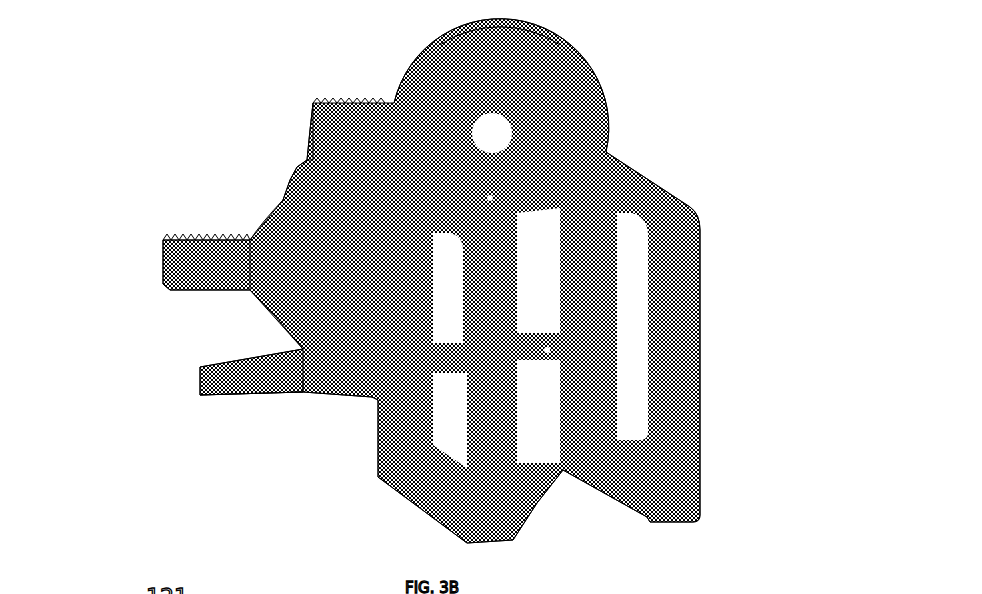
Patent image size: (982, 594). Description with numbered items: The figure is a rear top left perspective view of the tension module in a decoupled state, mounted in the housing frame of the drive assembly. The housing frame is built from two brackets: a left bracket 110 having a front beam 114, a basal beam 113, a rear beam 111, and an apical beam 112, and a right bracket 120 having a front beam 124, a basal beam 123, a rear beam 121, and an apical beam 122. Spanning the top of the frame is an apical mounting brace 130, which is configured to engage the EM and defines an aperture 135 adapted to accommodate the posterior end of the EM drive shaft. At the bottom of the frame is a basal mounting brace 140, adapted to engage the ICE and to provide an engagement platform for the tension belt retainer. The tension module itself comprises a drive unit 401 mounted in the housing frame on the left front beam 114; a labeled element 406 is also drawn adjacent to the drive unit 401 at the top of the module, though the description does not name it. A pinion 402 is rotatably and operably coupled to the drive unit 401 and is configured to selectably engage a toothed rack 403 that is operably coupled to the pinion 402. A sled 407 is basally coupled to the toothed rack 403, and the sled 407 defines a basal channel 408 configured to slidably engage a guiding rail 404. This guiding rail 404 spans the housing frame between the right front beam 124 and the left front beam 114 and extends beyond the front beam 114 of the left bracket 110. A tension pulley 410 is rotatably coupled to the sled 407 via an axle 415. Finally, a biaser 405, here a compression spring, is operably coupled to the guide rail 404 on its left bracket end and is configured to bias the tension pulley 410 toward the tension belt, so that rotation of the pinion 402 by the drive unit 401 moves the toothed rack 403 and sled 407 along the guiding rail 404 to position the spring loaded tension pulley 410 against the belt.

The left bracket 110 is at (497, 400).
The rear beam 111 is at (520, 325).
The apical beam 112 is at (500, 220).
The basal beam 113 is at (445, 473).
The front beam 114 is at (370, 401).
The right bracket 120 is at (703, 290).
The rear beam 121 is at (700, 383).
The apical beam 122 is at (653, 175).
The basal beam 123 is at (627, 510).
The front beam 124 is at (620, 327).
The apical mounting brace 130 is at (443, 63).
The aperture 135 is at (522, 32).
The basal mounting brace 140 is at (567, 483).
The drive unit 401 is at (287, 196).
The pinion 402 is at (293, 183).
The toothed rack 403 is at (163, 240).
The guiding rail 404 is at (210, 396).
The biaser 405 is at (268, 356).
The knurled knob 406 is at (345, 97).
The sled 407 is at (301, 343).
The basal channel 408 is at (300, 392).
The tension pulley 410 is at (268, 214).
The axle 415 is at (240, 306).